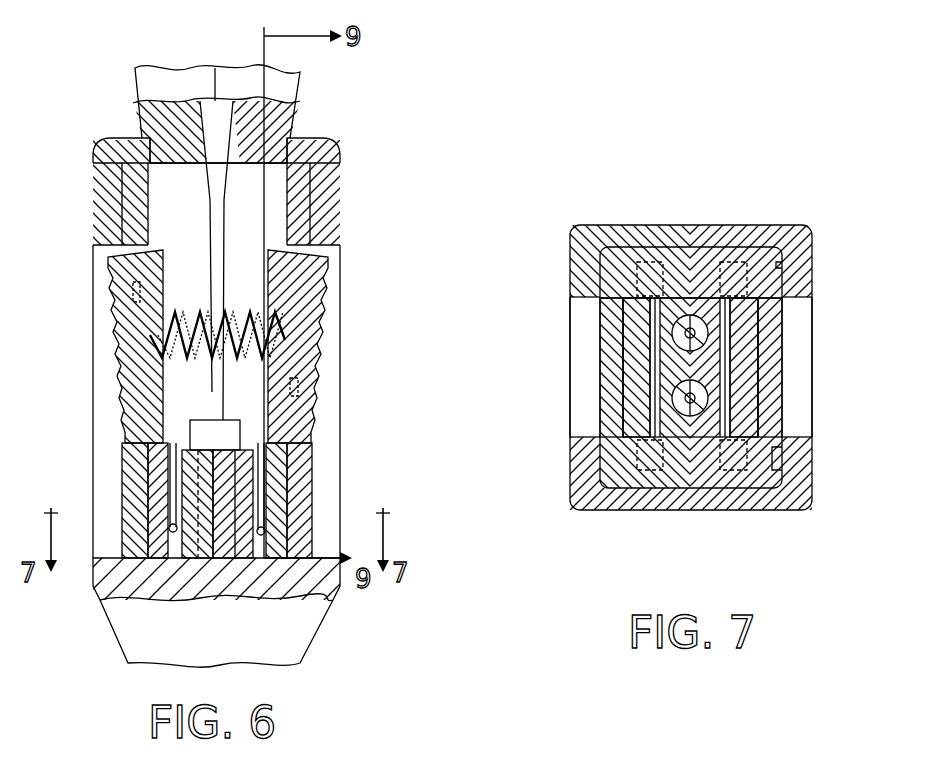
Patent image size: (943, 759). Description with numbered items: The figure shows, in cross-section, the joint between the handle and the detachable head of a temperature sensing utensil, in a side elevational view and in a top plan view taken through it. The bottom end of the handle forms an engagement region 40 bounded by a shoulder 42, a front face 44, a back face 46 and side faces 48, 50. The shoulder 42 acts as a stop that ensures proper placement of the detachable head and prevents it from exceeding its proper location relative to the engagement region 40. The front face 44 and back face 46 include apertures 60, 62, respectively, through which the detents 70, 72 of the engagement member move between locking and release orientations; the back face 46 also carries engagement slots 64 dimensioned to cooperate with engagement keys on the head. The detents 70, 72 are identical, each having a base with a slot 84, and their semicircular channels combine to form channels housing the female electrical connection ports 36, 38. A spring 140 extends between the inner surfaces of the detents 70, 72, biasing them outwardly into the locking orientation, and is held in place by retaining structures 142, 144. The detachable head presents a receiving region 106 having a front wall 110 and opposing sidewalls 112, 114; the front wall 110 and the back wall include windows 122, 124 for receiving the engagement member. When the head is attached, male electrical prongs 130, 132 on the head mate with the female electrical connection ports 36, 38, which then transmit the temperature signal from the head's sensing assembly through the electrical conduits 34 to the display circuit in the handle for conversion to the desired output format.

In FIG. 6, the electrical conduits 34 is at (228, 188).
In FIG. 6, the female electrical connection port 36 is at (283, 598).
In FIG. 7, the female electrical connection port 36 is at (712, 325).
In FIG. 7, the female electrical connection port 38 is at (698, 478).
In FIG. 6, the engagement region 40 is at (298, 205).
In FIG. 7, the engagement region 40 is at (613, 258).
In FIG. 6, the shoulder 42 is at (330, 140).
In FIG. 6, the front face 44 is at (135, 482).
In FIG. 7, the front face 44 is at (607, 403).
In FIG. 6, the back face 46 is at (305, 488).
In FIG. 7, the back face 46 is at (773, 360).
In FIG. 7, the side face 48 is at (645, 470).
In FIG. 7, the side face 50 is at (650, 258).
In FIG. 6, the aperture 60 is at (130, 250).
In FIG. 6, the aperture 62 is at (297, 248).
In FIG. 7, the engagement slots 64 is at (766, 470).
In FIG. 6, the detent 70 is at (120, 347).
In FIG. 7, the detent 70 is at (748, 425).
In FIG. 6, the detent 72 is at (312, 350).
In FIG. 6, the slot 84 is at (172, 536).
In FIG. 7, the slot 84 is at (728, 340).
In FIG. 7, the receiving region 106 is at (808, 503).
In FIG. 7, the front wall 110 is at (577, 256).
In FIG. 7, the sidewall 112 is at (707, 232).
In FIG. 7, the sidewall 114 is at (685, 502).
In FIG. 6, the window 122 is at (105, 425).
In FIG. 7, the window 122 is at (582, 330).
In FIG. 6, the window 124 is at (340, 418).
In FIG. 7, the window 124 is at (800, 400).
In FIG. 7, the male electrical prong 130 is at (690, 405).
In FIG. 7, the male electrical prong 132 is at (793, 257).
In FIG. 6, the spring 140 is at (320, 302).
In FIG. 6, the retaining structure 142 is at (133, 290).
In FIG. 6, the retaining structure 144 is at (315, 395).